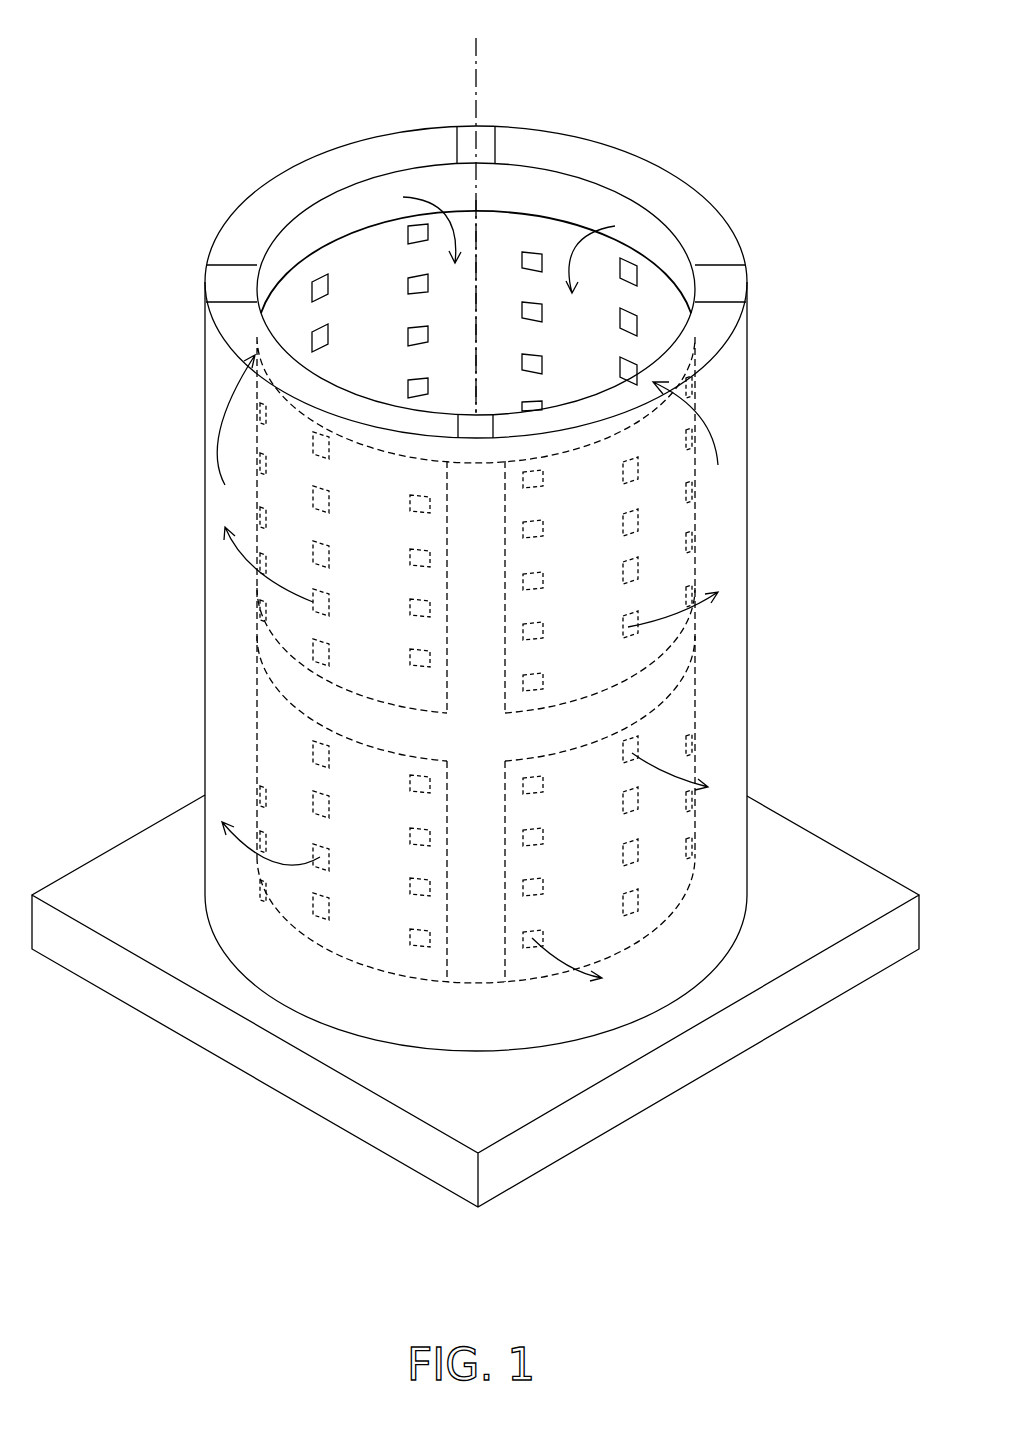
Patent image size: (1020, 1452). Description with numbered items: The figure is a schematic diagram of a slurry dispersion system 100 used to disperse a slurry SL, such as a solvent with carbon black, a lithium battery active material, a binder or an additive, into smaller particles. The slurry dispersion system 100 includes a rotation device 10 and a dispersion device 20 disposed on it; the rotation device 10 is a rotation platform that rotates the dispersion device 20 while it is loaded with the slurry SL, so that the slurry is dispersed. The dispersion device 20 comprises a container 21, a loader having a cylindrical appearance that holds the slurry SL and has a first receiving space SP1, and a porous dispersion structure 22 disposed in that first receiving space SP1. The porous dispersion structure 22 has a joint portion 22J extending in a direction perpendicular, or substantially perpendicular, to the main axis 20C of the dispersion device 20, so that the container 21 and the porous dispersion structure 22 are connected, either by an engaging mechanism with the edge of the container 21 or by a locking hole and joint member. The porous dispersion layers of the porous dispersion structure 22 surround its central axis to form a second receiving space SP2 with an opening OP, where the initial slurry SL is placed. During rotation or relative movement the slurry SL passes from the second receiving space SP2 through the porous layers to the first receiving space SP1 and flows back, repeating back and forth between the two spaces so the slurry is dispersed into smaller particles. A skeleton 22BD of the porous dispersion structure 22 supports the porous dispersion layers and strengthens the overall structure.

The slurry dispersion system 100 is at (102, 66).
The rotation device 10 is at (827, 864).
The dispersion device 20 is at (192, 397).
The container 21 is at (752, 577).
The porous dispersion structure 22 is at (712, 505).
The skeleton 22BD is at (700, 638).
The joint portion 22J is at (216, 288).
The main axis 20C is at (477, 209).
The opening OP is at (572, 182).
The slurry SL is at (222, 577).
The first receiving space SP1 is at (238, 305).
The second receiving space SP2 is at (346, 280).